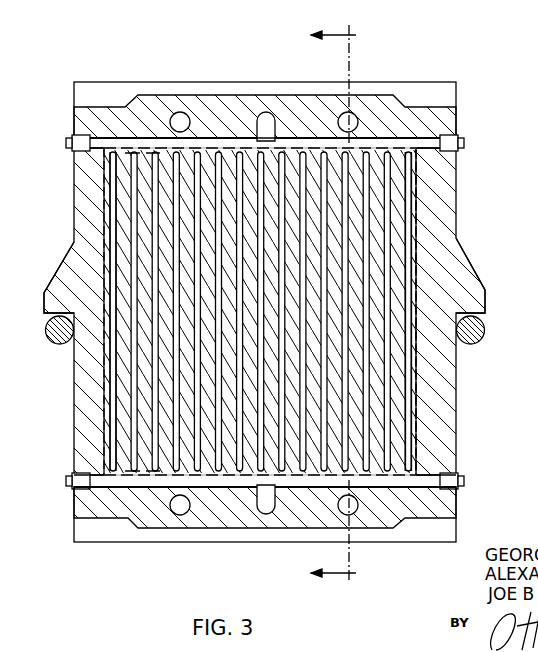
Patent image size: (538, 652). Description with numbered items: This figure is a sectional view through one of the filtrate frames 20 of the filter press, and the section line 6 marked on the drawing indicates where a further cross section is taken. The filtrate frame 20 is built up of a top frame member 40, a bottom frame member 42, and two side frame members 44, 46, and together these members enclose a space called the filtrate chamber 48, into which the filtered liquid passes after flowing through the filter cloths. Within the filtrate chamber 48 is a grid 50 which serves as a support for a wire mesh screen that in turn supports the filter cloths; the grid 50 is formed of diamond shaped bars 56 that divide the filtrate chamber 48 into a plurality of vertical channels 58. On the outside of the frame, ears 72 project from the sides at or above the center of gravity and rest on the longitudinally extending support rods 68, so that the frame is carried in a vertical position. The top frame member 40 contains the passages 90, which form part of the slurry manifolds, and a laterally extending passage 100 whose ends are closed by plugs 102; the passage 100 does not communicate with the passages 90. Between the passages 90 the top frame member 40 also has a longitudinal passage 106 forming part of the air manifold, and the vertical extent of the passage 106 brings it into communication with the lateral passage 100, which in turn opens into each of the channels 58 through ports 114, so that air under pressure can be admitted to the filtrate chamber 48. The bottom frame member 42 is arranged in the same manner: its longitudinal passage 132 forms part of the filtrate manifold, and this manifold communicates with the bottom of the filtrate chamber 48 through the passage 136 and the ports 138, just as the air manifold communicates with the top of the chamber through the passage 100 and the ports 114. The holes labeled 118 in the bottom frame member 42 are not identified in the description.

The filtrate frame 20 is at (215, 97).
The top frame member 40 is at (363, 97).
The bottom frame member 42 is at (230, 530).
The side frame member 44 is at (456, 197).
The side frame member 46 is at (74, 189).
The filtrate chamber 48 is at (413, 233).
The grid 50 is at (411, 250).
The diamond shaped bar 56 is at (381, 423).
The channel 58 is at (370, 373).
The support rod 68 is at (47, 333).
The ear 72 is at (56, 281).
The passage 90 is at (181, 111).
The laterally extending passage 100 is at (232, 143).
The plug 102 is at (66, 143).
The passage 106 is at (266, 113).
The port 114 is at (157, 152).
The lower plate holes 118 is at (180, 509).
The passage 132 is at (268, 514).
The passage 136 is at (212, 481).
The port 138 is at (160, 474).
The section line 6- 6 is at (323, 304).